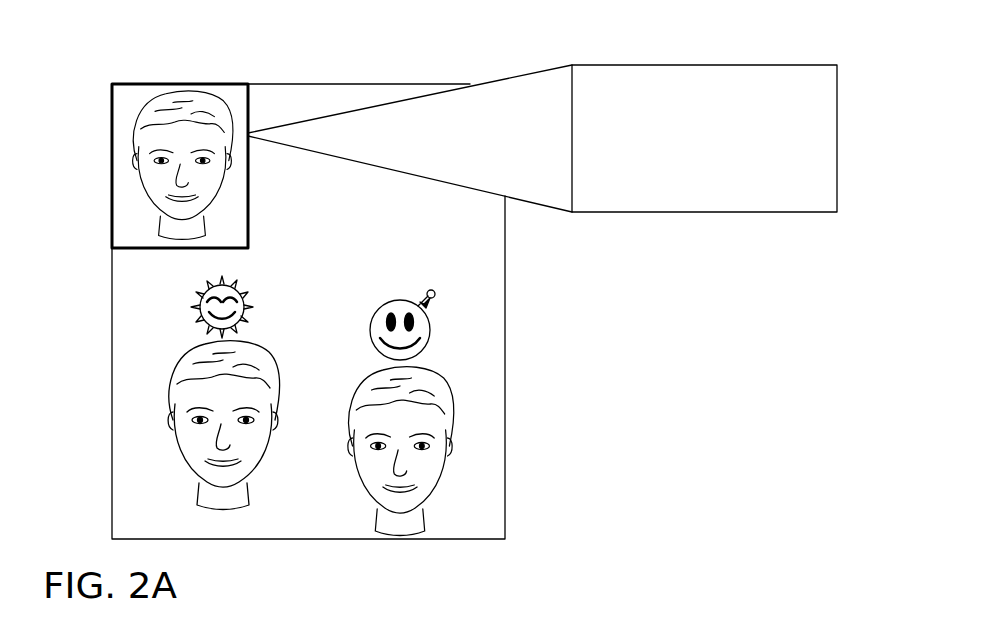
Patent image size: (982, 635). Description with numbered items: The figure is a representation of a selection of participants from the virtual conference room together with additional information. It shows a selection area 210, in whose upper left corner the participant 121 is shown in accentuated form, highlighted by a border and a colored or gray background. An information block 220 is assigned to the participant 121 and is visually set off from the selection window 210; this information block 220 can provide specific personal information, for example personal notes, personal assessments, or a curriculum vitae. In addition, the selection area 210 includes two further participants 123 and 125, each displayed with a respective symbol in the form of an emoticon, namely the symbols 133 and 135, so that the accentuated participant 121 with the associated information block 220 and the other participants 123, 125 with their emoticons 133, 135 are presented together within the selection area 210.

The participant 121 is at (155, 195).
The participant 123 is at (182, 452).
The participant 125 is at (430, 492).
The symbol (emoticon) 133 is at (193, 306).
The symbol (emoticon) 135 is at (430, 332).
The selection area 210 is at (478, 530).
The information block 220 is at (727, 212).